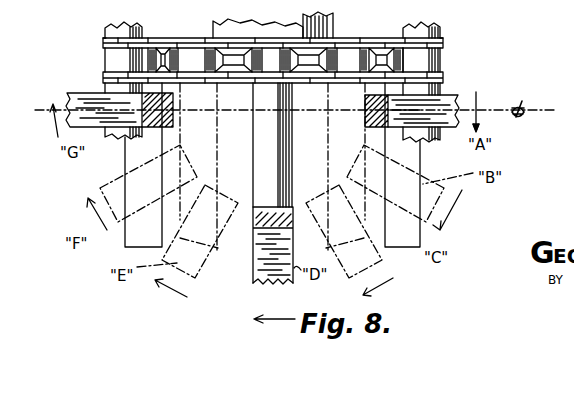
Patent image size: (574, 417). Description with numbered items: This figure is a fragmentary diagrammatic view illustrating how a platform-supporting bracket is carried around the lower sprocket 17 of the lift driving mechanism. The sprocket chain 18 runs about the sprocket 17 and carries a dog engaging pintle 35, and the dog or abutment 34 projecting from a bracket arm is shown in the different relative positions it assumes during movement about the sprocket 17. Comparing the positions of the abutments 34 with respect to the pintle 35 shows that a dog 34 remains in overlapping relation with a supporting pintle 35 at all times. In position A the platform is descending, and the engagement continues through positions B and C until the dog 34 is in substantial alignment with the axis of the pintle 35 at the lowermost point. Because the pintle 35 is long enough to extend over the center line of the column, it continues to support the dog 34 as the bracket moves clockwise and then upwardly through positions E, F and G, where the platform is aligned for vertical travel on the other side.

The lower sprocket 17 is at (343, 53).
The sprocket chain 18 is at (443, 38).
The dog or abutment 34 is at (80, 96).
The dog engaging pintle 35 is at (122, 136).